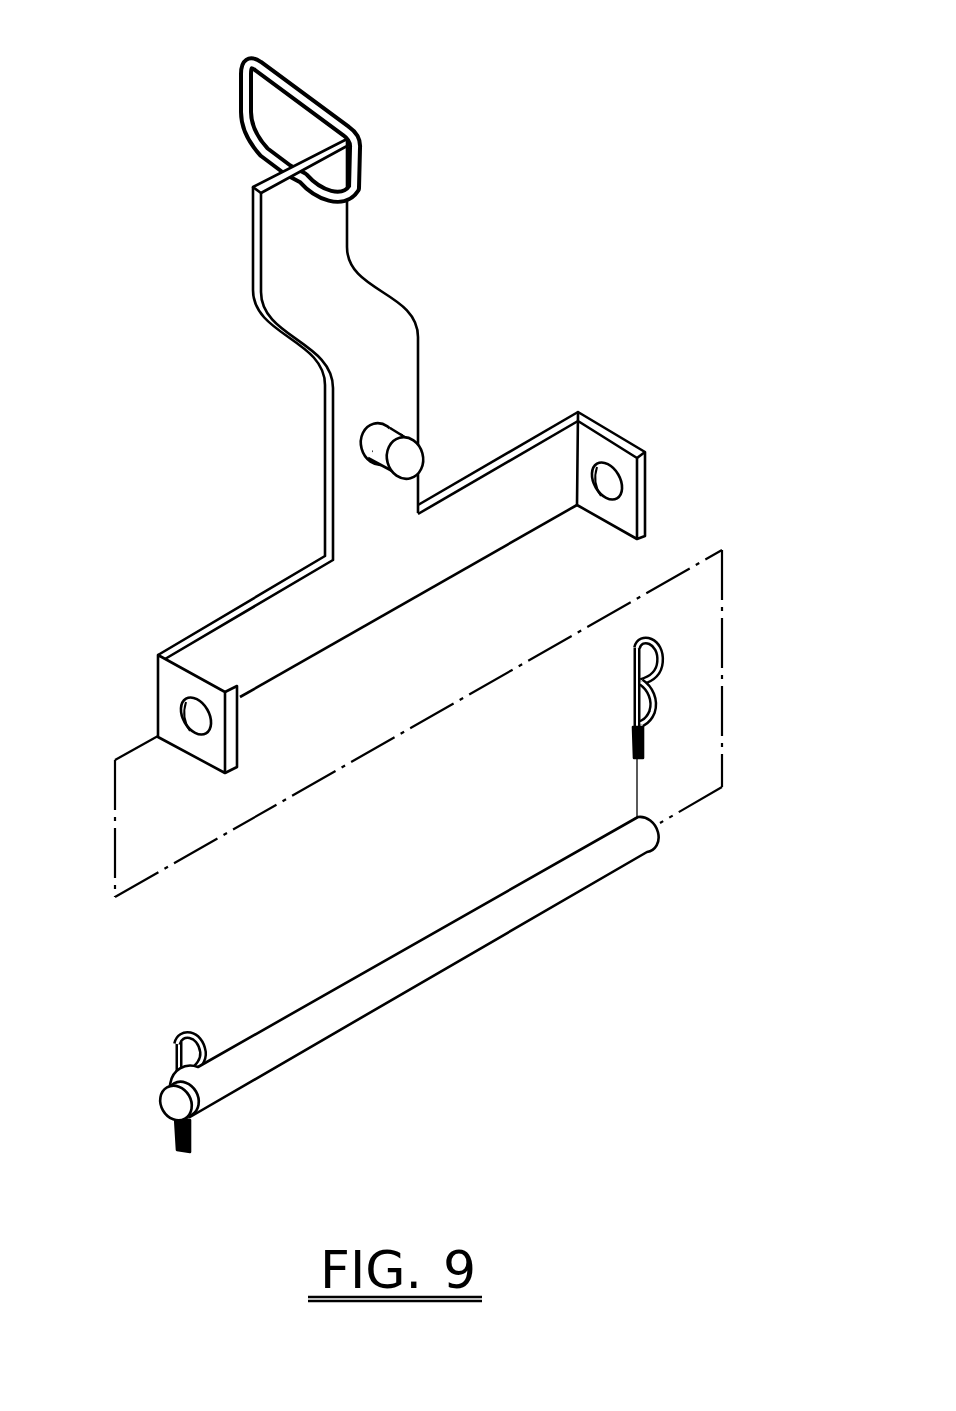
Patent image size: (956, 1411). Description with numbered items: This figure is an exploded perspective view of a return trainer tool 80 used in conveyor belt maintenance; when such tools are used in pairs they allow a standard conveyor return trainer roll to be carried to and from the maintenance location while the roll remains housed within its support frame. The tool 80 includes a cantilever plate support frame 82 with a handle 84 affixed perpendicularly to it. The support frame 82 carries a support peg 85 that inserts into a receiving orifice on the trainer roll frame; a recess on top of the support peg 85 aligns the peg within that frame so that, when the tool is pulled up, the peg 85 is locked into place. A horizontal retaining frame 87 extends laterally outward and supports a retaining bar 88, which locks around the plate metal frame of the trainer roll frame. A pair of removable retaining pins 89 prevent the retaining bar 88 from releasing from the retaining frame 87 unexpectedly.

The return trainer tool 80 is at (690, 134).
The cantilever plate support frame 82 is at (372, 312).
The handle 84 is at (303, 84).
The support peg 85 is at (407, 456).
The horizontal retaining frame 87 is at (545, 490).
The retaining bar 88 is at (413, 955).
The removable retaining pins 89 is at (632, 672).